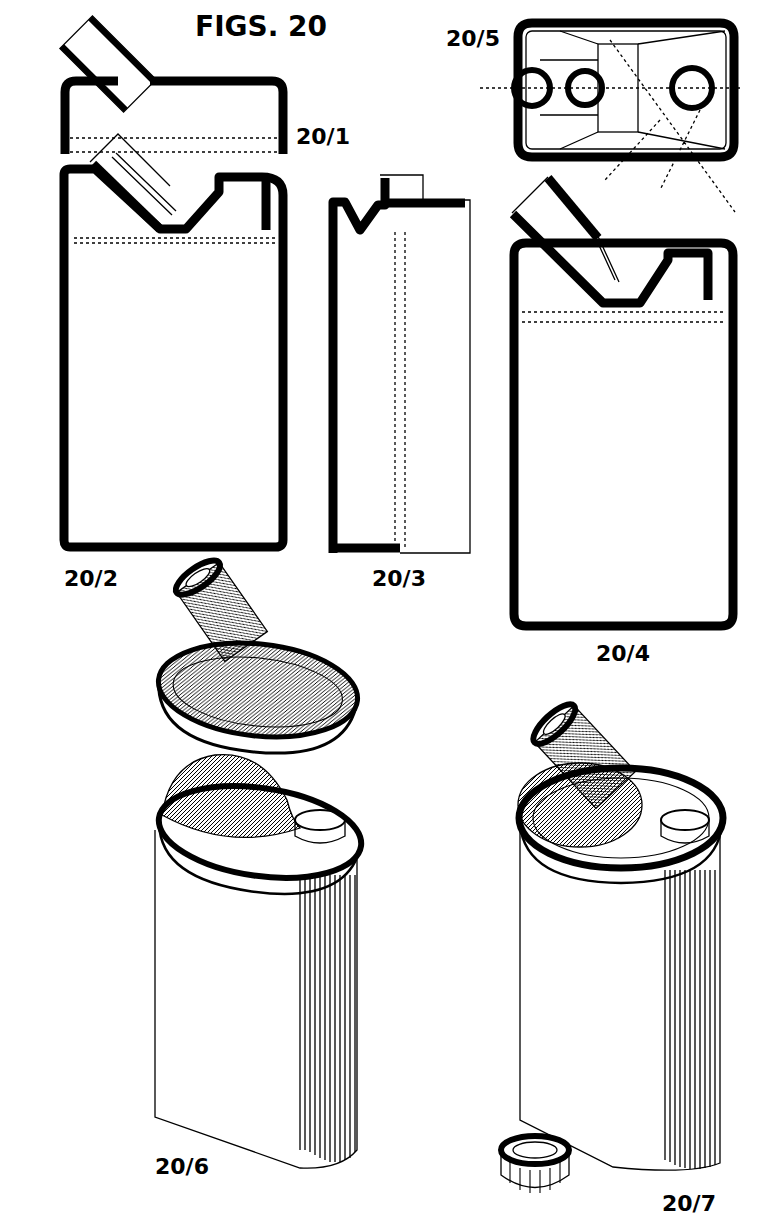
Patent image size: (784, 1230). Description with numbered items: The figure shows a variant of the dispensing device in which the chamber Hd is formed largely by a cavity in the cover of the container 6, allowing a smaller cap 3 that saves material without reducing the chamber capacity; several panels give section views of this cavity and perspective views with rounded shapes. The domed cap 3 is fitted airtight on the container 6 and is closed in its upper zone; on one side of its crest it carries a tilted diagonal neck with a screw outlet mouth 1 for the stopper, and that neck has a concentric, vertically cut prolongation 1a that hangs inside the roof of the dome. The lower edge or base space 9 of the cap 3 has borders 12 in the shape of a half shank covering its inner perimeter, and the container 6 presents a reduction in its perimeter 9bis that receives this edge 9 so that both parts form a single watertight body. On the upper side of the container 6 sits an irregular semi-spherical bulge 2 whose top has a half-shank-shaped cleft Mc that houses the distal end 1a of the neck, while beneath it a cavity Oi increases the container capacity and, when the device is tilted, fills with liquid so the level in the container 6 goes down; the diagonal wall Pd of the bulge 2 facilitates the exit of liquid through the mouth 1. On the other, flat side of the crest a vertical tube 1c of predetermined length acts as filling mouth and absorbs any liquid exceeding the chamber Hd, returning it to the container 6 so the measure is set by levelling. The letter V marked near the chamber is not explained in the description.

The screw outlet mouth 1 is at (76, 36).
The neck distal end 1a is at (150, 90).
The vertical tube 1c is at (268, 200).
The bulge 2 is at (184, 814).
The cap 3 is at (290, 86).
The container 6 is at (362, 300).
The edge of the cap 9 is at (250, 184).
The perimeter reduction 9bis is at (266, 214).
The borders 12 is at (78, 192).
The chamber Hd is at (166, 214).
The cleft Mc is at (100, 211).
The cavity Oi is at (140, 214).
The diagonal wall Pd is at (140, 217).
The volume V is at (722, 242).